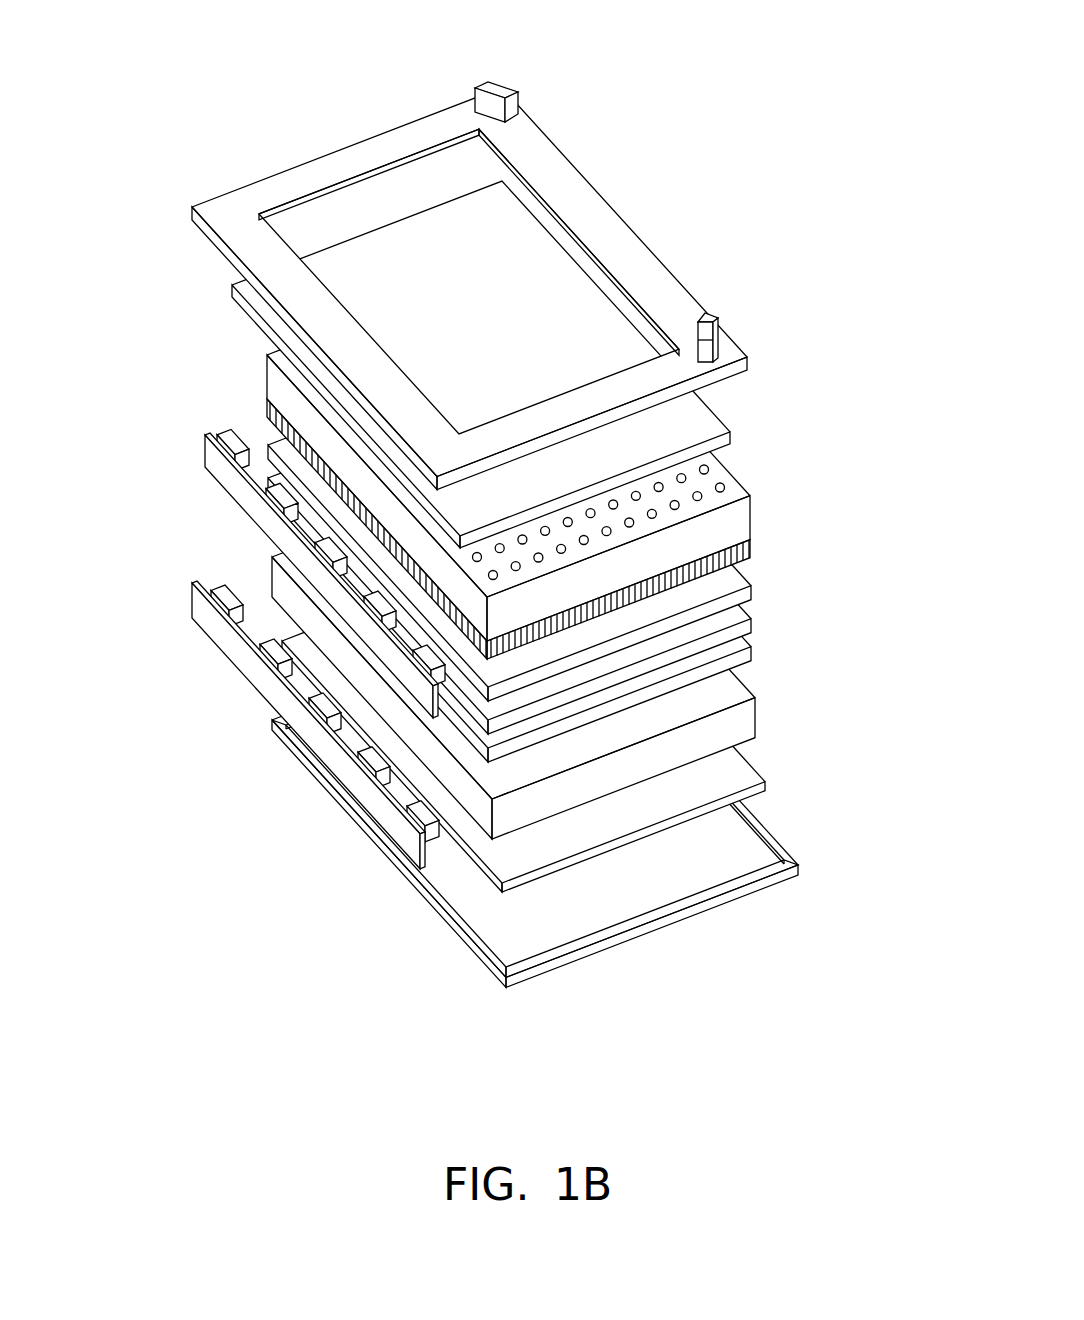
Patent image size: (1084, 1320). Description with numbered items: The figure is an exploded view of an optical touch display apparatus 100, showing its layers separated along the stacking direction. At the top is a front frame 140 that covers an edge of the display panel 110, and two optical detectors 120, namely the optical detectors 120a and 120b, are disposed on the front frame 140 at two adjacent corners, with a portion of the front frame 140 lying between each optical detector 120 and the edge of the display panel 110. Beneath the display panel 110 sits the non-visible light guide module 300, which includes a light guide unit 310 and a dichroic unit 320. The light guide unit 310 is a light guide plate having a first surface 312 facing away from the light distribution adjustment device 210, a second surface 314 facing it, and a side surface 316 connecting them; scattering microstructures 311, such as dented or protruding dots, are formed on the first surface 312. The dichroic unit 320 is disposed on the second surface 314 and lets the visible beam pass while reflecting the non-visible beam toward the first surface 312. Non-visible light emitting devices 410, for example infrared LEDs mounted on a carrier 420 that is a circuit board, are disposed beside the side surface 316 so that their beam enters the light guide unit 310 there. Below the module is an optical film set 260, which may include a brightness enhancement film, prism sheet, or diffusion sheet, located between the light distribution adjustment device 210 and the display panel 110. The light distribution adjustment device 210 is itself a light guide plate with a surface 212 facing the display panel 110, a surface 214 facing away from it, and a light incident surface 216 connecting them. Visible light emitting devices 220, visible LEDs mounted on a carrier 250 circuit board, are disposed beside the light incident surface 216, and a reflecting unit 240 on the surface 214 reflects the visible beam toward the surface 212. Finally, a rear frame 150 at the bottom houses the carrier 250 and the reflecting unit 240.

The optical touch display apparatus 100 is at (523, 540).
The display panel 110 is at (697, 417).
The optical detector 120 is at (646, 182).
The optical detector 120a is at (497, 86).
The optical detector 120b is at (706, 315).
The front frame 140 is at (590, 204).
The rear frame 150 is at (522, 861).
The light distribution adjustment device 210 is at (567, 805).
The surface 212 is at (728, 695).
The surface 214 is at (548, 822).
The light incident surface 216 is at (479, 795).
The visible light emitting device 220 is at (415, 812).
The reflecting unit 240 is at (617, 846).
The carrier 250 is at (327, 748).
The optical film set 260 is at (768, 582).
The non-visible light guide module 300 is at (527, 441).
The light guide unit 310 is at (499, 432).
The scattering microstructures 311 is at (635, 492).
The first surface 312 is at (735, 492).
The second surface 314 is at (703, 561).
The side surface 316 is at (275, 386).
The dichroic unit 320 is at (561, 529).
The non-visible light emitting device 410 is at (233, 443).
The carrier 420 is at (207, 460).